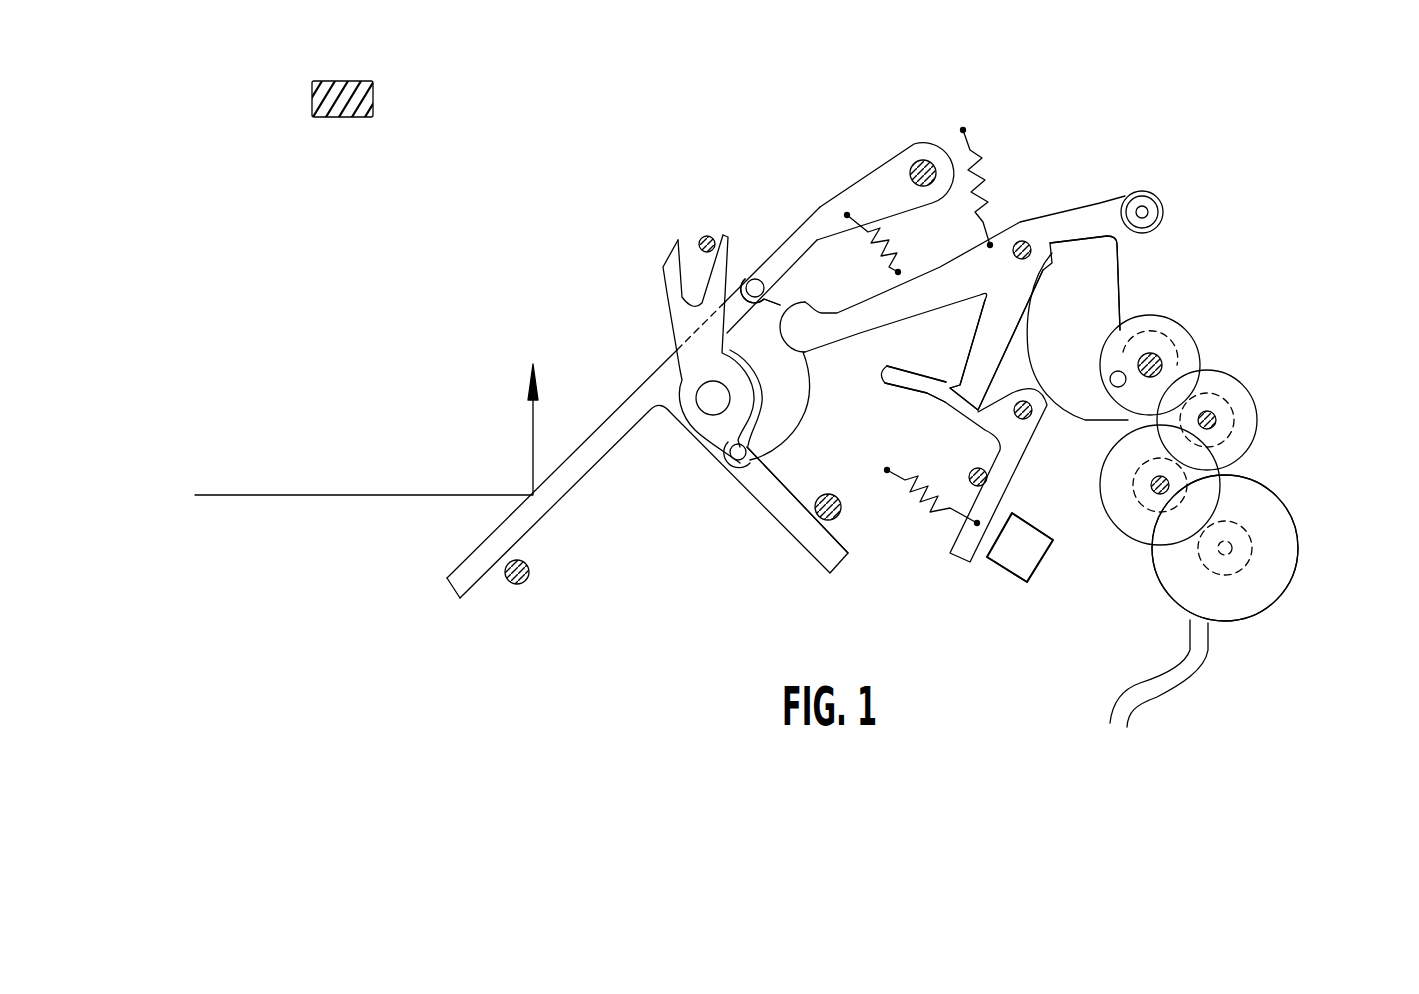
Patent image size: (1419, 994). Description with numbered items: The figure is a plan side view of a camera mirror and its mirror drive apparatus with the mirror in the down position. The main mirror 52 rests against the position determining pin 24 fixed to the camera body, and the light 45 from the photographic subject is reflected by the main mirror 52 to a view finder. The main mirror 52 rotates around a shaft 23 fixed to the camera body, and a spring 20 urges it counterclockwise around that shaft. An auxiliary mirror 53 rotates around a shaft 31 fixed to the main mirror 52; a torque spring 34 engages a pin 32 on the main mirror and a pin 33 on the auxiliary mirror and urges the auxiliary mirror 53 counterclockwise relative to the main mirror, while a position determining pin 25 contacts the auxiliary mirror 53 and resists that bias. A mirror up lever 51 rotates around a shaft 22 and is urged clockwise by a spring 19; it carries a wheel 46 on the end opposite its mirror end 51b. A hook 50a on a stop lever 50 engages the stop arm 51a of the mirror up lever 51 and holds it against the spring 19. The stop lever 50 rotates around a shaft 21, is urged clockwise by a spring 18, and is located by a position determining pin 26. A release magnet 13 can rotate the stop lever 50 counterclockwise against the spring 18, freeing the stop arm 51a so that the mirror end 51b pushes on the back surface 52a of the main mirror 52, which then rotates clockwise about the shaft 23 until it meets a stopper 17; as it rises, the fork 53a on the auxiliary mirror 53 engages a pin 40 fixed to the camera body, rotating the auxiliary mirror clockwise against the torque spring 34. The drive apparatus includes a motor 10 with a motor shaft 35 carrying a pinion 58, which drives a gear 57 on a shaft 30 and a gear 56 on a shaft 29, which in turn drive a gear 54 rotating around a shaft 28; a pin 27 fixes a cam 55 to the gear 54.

The motor 10 is at (1297, 563).
The release magnet 13 is at (1012, 598).
The stopper 17 is at (373, 105).
The spring 18 is at (928, 485).
The spring 19 is at (978, 165).
The spring 20 is at (890, 238).
The shaft 21 is at (1030, 420).
The shaft 22 is at (1023, 240).
The shaft 23 is at (923, 160).
The position determining pin 24 is at (527, 585).
The position determining pin 25 is at (830, 494).
The position determining pin 26 is at (972, 470).
The pin 27 is at (1113, 385).
The shaft 28 is at (1175, 350).
The shaft 29 is at (1217, 423).
The shaft 30 is at (1153, 490).
The shaft 31 is at (708, 403).
The pin 32 is at (751, 276).
The pin 33 is at (735, 465).
The torque spring 34 is at (806, 393).
The motor shaft 35 is at (1230, 547).
The pin 40 is at (701, 238).
The light 45 is at (325, 497).
The wheel 46 is at (1160, 190).
The stop lever 50 is at (963, 563).
The hook 50a is at (933, 387).
The mirror up lever 51 is at (1105, 203).
The stop arm 51a is at (965, 370).
The mirror end 51b is at (797, 297).
The main mirror 52 is at (590, 462).
The back surface 52a is at (820, 207).
The auxiliary mirror 53 is at (787, 520).
The fork 53a is at (665, 290).
The gear 54 is at (1187, 320).
The cam 55 is at (1120, 275).
The gear 56 is at (1262, 403).
The gear 57 is at (1050, 543).
The pinion 58 is at (1237, 573).